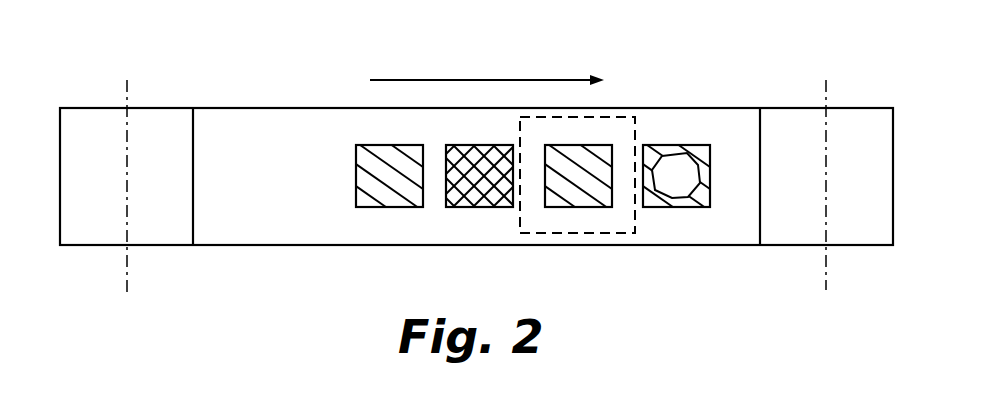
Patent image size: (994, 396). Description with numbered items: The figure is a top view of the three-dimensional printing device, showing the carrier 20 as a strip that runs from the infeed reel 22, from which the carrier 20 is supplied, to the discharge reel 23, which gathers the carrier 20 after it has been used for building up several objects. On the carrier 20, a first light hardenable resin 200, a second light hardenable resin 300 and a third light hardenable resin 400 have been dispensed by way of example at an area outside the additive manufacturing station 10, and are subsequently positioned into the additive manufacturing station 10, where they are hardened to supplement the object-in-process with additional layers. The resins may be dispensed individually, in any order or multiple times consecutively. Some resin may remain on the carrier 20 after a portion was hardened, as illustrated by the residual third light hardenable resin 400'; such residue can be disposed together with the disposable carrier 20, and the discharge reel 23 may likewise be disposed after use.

The additive manufacturing station 10 is at (617, 118).
The carrier 20 is at (222, 120).
The infeed reel 22 is at (175, 230).
The discharge reel 23 is at (794, 232).
The first light hardenable resin 200 is at (383, 197).
The second light hardenable resin 300 is at (480, 197).
The third light hardenable resin 400 is at (584, 223).
The third light hardenable resin 400' is at (691, 223).